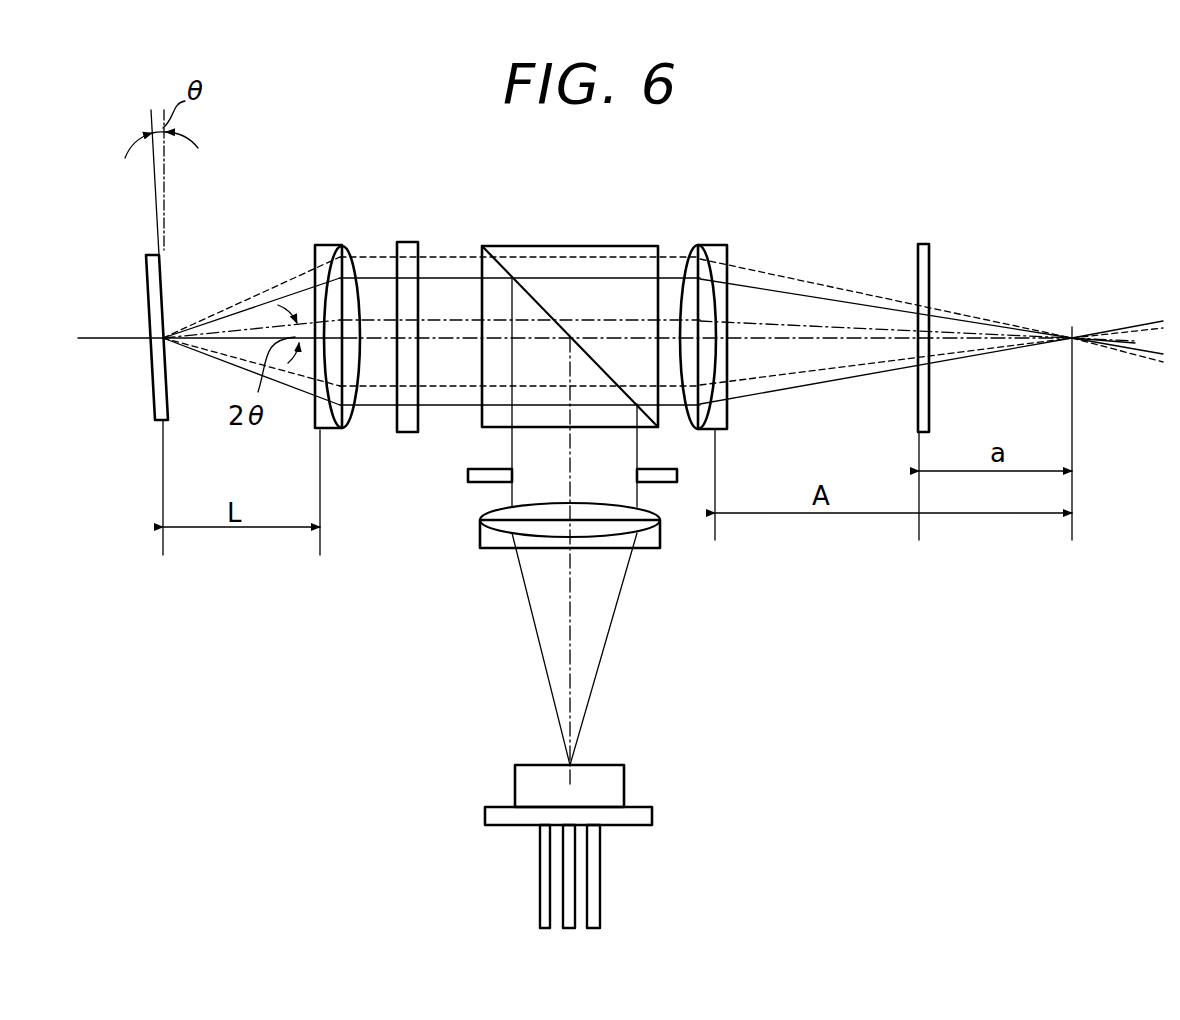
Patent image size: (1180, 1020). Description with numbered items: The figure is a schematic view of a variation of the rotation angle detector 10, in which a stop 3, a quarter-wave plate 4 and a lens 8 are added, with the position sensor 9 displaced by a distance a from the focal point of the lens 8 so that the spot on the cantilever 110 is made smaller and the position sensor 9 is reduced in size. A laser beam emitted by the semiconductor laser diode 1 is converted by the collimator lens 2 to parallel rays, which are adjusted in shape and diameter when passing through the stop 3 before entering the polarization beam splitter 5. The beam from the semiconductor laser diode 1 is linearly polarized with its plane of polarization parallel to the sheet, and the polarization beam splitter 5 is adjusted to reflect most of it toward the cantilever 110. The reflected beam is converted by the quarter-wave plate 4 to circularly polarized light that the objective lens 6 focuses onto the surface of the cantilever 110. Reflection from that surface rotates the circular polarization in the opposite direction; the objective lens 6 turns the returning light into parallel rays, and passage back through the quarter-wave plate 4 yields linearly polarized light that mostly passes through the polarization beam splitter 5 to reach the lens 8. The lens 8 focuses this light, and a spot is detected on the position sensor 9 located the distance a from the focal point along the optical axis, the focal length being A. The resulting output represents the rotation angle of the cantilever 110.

The semiconductor laser diode 1 is at (518, 780).
The collimator lens 2 is at (480, 537).
The stop 3 is at (468, 473).
The quarter-wave plate 4 is at (411, 245).
The polarization beam splitter 5 is at (588, 250).
The objective lens 6 is at (330, 248).
The lens 8 is at (716, 250).
The position sensor 9 is at (926, 246).
The rotation angle detector 10 is at (857, 639).
The cantilever 110 is at (152, 400).